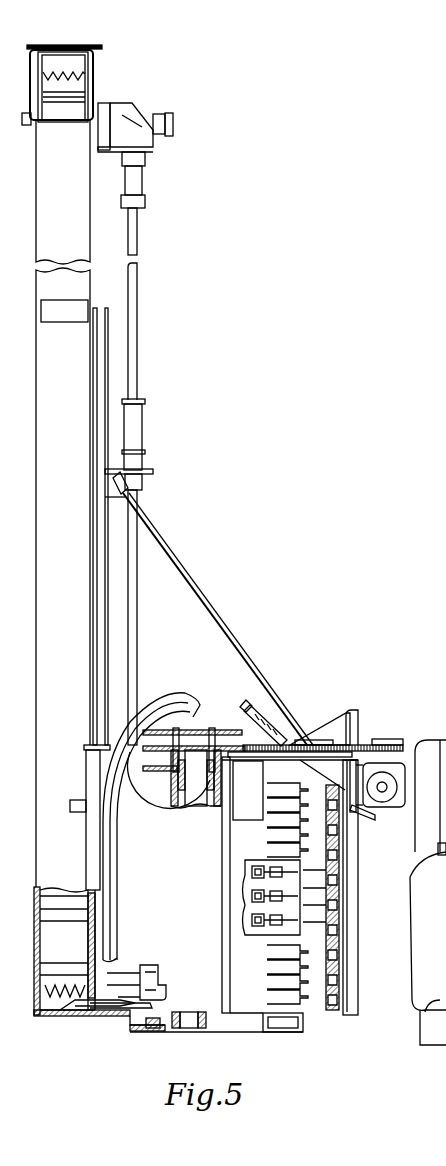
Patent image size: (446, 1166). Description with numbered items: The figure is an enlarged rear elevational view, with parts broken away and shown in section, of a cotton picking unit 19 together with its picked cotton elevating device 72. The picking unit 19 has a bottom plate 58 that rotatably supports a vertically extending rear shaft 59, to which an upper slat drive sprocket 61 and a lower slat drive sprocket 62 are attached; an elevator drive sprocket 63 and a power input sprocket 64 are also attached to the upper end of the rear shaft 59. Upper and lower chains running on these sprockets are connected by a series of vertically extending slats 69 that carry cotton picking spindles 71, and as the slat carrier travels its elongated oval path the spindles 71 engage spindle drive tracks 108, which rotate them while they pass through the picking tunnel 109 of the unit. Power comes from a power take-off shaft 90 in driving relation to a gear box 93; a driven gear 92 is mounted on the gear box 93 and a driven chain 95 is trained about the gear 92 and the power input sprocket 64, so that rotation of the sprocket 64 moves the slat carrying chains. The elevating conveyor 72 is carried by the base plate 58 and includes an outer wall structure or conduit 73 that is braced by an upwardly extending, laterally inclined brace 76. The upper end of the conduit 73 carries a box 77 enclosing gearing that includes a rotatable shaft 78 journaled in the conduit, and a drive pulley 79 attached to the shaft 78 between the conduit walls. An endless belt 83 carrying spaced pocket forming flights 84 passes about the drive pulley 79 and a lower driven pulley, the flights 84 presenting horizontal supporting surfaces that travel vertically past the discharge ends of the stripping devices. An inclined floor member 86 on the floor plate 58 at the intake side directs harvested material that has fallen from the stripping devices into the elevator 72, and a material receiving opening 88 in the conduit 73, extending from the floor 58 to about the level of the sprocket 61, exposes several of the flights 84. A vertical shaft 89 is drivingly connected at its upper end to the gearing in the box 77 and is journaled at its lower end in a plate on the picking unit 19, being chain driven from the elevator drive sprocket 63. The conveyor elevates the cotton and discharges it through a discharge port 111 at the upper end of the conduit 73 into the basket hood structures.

The picking unit 19 is at (182, 872).
The bottom plate 58 is at (154, 1032).
The rear shaft 59 is at (196, 796).
The upper slat drive sprocket 61 is at (160, 777).
The lower slat drive sprocket 62 is at (216, 1032).
The elevator drive sprocket 63 is at (180, 714).
The power input sprocket 64 is at (228, 726).
The slats 69 is at (252, 872).
The cotton picking spindles 71 is at (335, 870).
The picked cotton elevating device 72 is at (72, 584).
The conduit 73 is at (35, 890).
The brace 76 is at (242, 636).
The box 77 is at (124, 116).
The rotatable shaft 78 is at (32, 138).
The drive pulley 79 is at (88, 106).
The endless belt 83 is at (68, 930).
The flights 84 is at (53, 1005).
The inclined floor member 86 is at (84, 1012).
The material receiving opening 88 is at (94, 932).
The vertical shaft 89 is at (133, 356).
The power take-off shaft 90 is at (380, 776).
The driven gear 92 is at (393, 745).
The gear box 93 is at (380, 812).
The driven chain 95 is at (302, 742).
The spindle drive tracks 108 is at (255, 898).
The picking tunnel 109 is at (320, 968).
The discharge port 111 is at (68, 56).